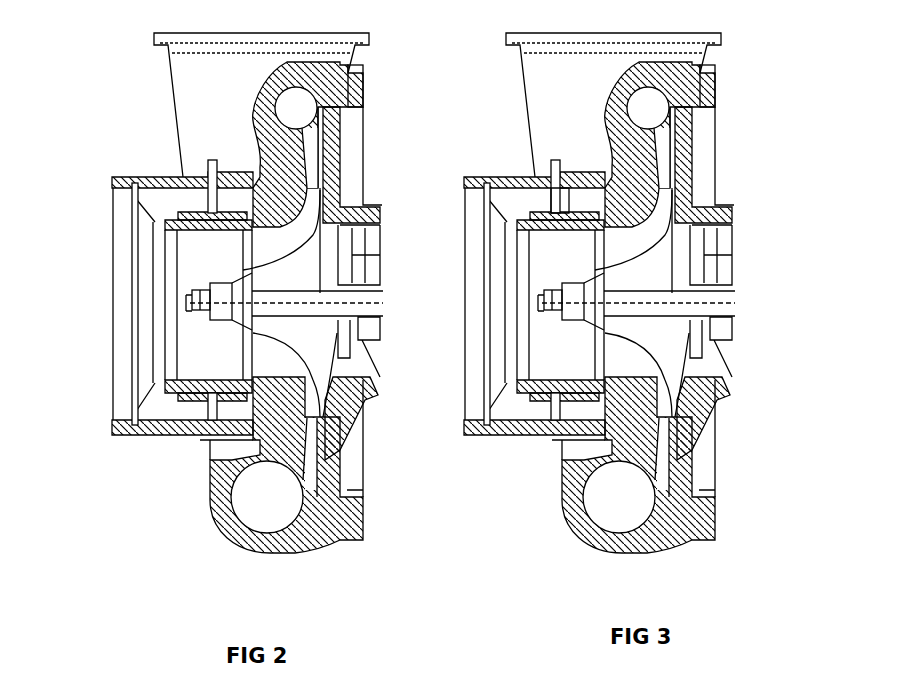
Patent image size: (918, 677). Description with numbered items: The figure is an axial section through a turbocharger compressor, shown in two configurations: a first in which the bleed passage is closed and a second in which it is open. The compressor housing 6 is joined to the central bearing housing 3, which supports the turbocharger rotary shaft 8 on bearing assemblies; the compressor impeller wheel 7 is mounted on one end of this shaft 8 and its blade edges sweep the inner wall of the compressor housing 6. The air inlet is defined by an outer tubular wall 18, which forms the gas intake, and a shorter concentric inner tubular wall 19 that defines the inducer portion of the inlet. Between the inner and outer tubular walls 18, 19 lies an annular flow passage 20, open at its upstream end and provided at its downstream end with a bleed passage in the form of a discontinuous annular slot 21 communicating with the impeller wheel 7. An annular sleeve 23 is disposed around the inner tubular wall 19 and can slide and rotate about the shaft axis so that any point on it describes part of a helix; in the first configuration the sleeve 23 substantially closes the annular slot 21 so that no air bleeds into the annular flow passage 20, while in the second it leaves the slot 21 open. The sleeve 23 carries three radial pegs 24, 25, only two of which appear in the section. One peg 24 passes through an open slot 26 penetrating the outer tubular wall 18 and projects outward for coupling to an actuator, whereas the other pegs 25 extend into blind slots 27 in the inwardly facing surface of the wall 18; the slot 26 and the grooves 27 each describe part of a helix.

In FIG. 2, the central bearing housing 3 is at (332, 123).
In FIG. 2, the compressor housing 6 is at (355, 80).
In FIG. 2, the compressor impeller wheel 7 is at (146, 305).
In FIG. 2, the turbocharger rotary shaft 8 is at (373, 307).
In FIG. 2, the outer tubular wall 18 is at (115, 182).
In FIG. 3, the outer tubular wall 18 is at (461, 276).
In FIG. 2, the inner tubular wall 19 is at (167, 228).
In FIG. 3, the inner tubular wall 19 is at (475, 303).
In FIG. 2, the annular flow passage 20 is at (163, 200).
In FIG. 2, the annular slot 21 is at (250, 232).
In FIG. 3, the annular slot 21 is at (683, 278).
In FIG. 2, the annular sleeve 23 is at (168, 385).
In FIG. 3, the annular sleeve 23 is at (543, 264).
In FIG. 2, the peg 24 is at (210, 163).
In FIG. 3, the peg 24 is at (555, 150).
In FIG. 2, the peg 25 is at (207, 410).
In FIG. 3, the peg 25 is at (535, 446).
In FIG. 3, the open slot 26 is at (572, 165).
In FIG. 2, the blind slots 27 is at (202, 417).
In FIG. 3, the blind slots 27 is at (534, 447).